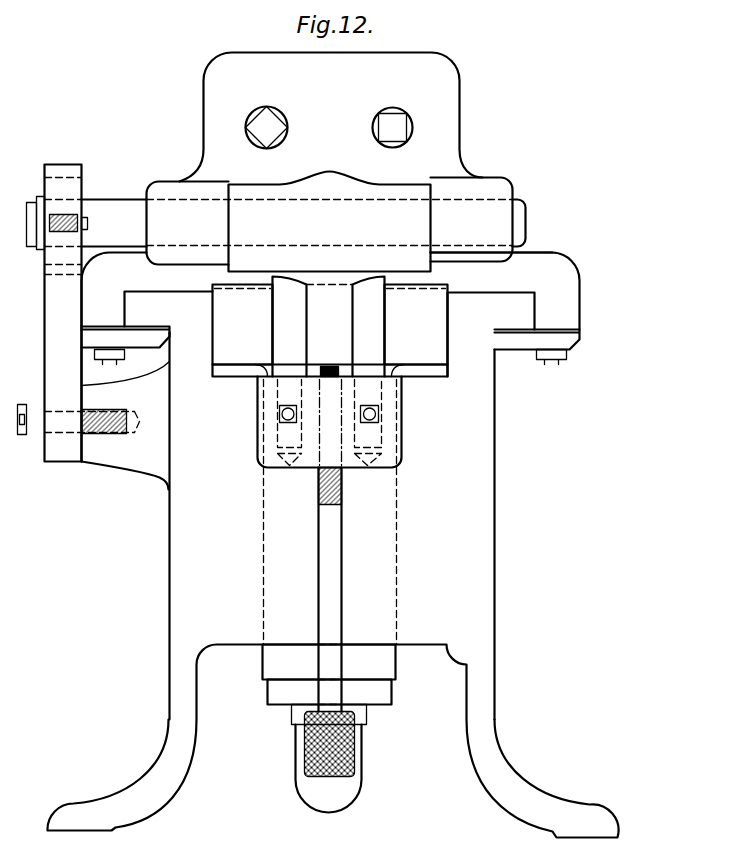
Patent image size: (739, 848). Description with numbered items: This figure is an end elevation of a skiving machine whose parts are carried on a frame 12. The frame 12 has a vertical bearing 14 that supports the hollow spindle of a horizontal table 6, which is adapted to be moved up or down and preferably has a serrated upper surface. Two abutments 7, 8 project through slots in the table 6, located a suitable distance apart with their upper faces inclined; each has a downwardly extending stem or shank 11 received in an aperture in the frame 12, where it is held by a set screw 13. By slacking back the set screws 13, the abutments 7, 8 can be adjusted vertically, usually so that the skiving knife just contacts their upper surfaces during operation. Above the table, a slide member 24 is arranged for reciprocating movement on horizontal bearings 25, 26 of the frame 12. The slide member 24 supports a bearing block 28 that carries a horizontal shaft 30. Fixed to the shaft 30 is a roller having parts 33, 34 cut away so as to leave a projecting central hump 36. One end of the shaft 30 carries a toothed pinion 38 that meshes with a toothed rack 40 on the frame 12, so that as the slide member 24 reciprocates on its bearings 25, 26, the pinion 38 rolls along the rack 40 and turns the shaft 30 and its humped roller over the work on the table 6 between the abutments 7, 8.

The horizontal table 6 is at (430, 303).
The abutment 7 is at (373, 322).
The abutment 8 is at (280, 319).
The stem or shank 11 is at (286, 441).
The frame 12 is at (188, 590).
The set screw 13 is at (280, 414).
The vertical bearing 14 is at (388, 541).
The slide member 24 is at (487, 280).
The horizontal bearing 25 is at (520, 317).
The horizontal bearing 26 is at (138, 303).
The bearing block 28 is at (447, 137).
The horizontal shaft 30 is at (522, 214).
The cut-away part 33 is at (252, 185).
The cut-away part 34 is at (401, 185).
The central hump 36 is at (330, 187).
The toothed pinion 38 is at (57, 192).
The toothed rack 40 is at (52, 268).